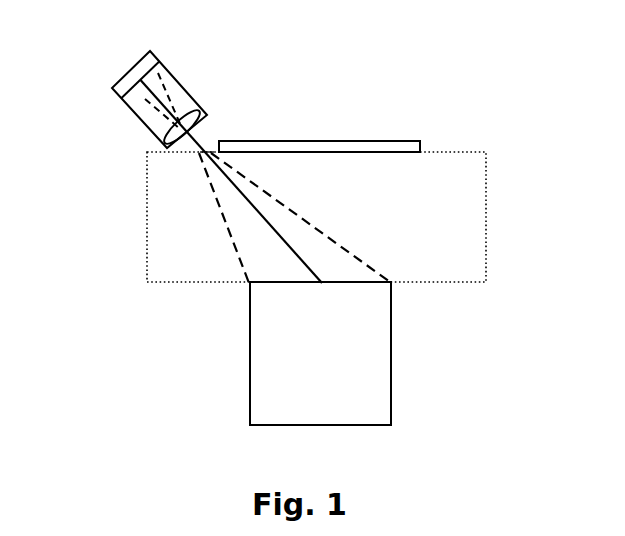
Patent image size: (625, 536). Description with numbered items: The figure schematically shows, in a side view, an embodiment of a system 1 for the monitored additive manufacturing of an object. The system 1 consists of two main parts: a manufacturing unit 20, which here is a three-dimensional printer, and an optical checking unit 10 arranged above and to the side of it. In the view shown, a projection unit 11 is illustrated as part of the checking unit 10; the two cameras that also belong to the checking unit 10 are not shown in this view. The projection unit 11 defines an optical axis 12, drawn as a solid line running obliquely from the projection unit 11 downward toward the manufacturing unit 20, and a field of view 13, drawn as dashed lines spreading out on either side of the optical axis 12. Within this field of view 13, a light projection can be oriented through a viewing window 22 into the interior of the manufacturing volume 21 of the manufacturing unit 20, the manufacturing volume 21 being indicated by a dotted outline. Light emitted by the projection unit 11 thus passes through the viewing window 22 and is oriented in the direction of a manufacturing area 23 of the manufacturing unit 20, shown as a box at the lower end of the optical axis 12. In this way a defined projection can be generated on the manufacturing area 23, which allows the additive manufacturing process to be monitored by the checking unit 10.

The system 1 is at (430, 22).
The optical checking unit 10 is at (100, 130).
The projection unit 11 is at (105, 77).
The optical axis 12 is at (197, 181).
The field of view 13 is at (235, 218).
The manufacturing unit 20 is at (380, 128).
The manufacturing volume 21 is at (350, 233).
The viewing window 22 is at (240, 119).
The manufacturing area 23 is at (358, 353).